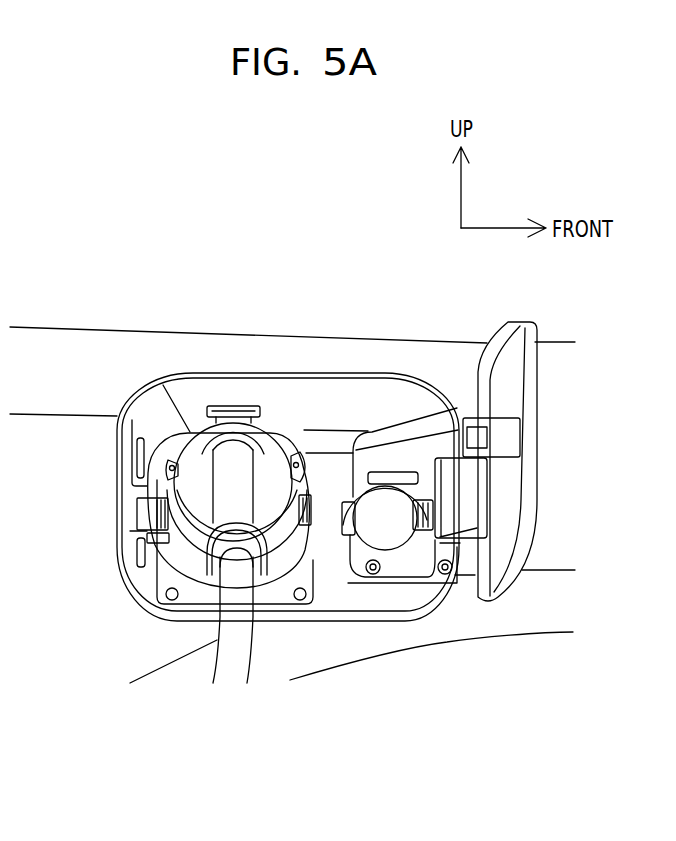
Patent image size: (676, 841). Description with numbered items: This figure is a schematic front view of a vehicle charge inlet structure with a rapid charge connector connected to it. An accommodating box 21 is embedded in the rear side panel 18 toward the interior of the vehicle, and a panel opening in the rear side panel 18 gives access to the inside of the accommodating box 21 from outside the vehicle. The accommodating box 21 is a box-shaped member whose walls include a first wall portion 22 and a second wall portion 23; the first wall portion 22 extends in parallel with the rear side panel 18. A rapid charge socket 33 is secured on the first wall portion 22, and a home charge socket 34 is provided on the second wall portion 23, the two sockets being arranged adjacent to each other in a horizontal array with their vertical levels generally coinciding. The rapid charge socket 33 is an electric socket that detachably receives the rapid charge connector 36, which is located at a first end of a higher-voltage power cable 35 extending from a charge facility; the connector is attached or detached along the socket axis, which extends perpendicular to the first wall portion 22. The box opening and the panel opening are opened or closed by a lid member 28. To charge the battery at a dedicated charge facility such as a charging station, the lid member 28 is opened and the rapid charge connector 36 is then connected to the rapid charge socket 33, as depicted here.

The rear side panel 18 is at (103, 345).
The accommodating box 21 is at (318, 414).
The first wall portion 22 is at (350, 595).
The second wall portion 23 is at (420, 452).
The lid member 28 is at (528, 468).
The rapid charge socket 33 is at (150, 573).
The home charge socket 34 is at (420, 587).
The higher-voltage power cable 35 is at (240, 645).
The rapid charge connector 36 is at (276, 460).